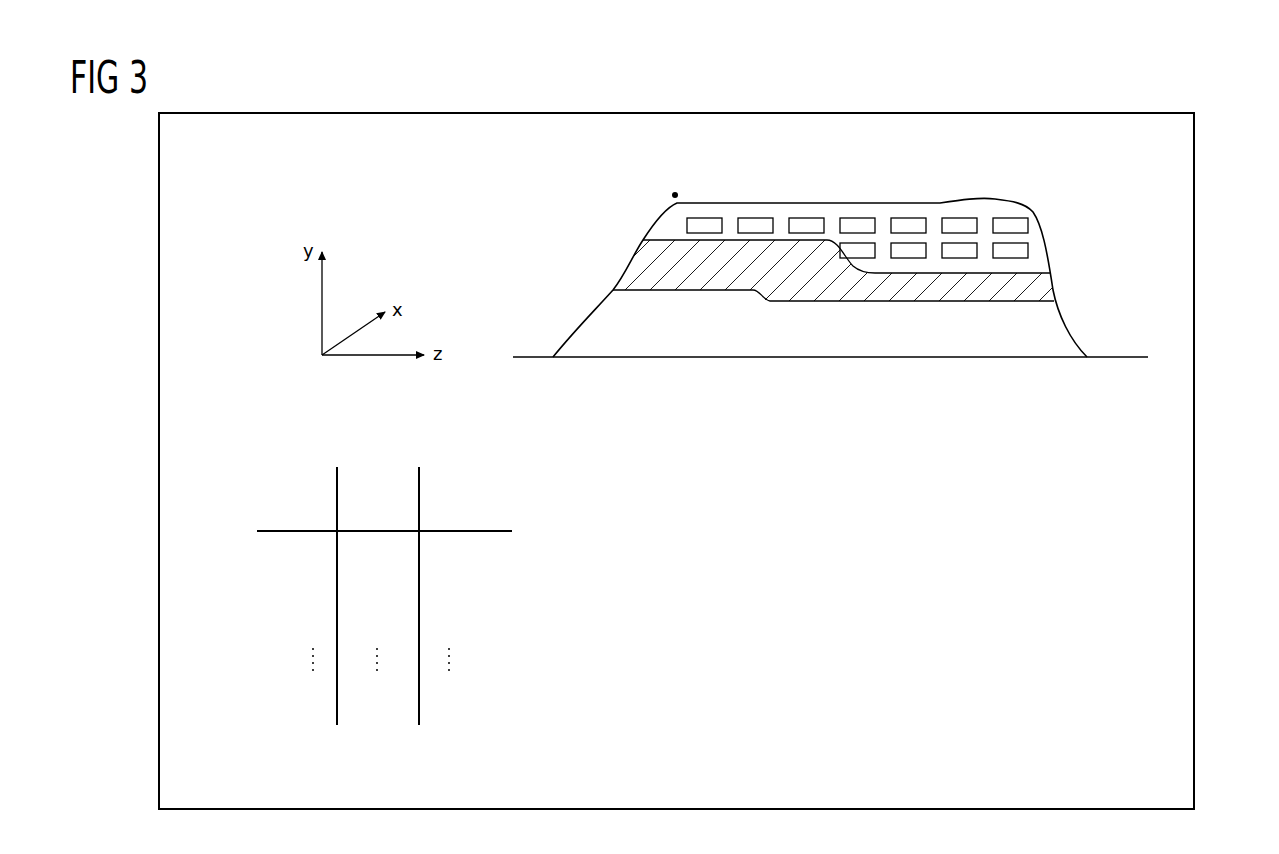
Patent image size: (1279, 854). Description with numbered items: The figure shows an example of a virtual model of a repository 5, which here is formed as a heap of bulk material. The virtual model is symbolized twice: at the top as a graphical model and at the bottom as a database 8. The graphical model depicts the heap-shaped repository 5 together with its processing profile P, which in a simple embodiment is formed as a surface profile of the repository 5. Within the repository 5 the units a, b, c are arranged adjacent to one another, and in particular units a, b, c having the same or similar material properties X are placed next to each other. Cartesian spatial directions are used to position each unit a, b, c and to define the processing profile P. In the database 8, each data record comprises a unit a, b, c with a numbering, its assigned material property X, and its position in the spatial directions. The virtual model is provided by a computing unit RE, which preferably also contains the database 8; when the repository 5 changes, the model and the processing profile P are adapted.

The repository 5 is at (826, 248).
The processing profile P is at (675, 195).
The unit a is at (908, 226).
The unit b is at (958, 226).
The unit c is at (1010, 226).
The material property X is at (1057, 284).
The database 8 is at (295, 475).
The computing unit RE is at (1195, 416).